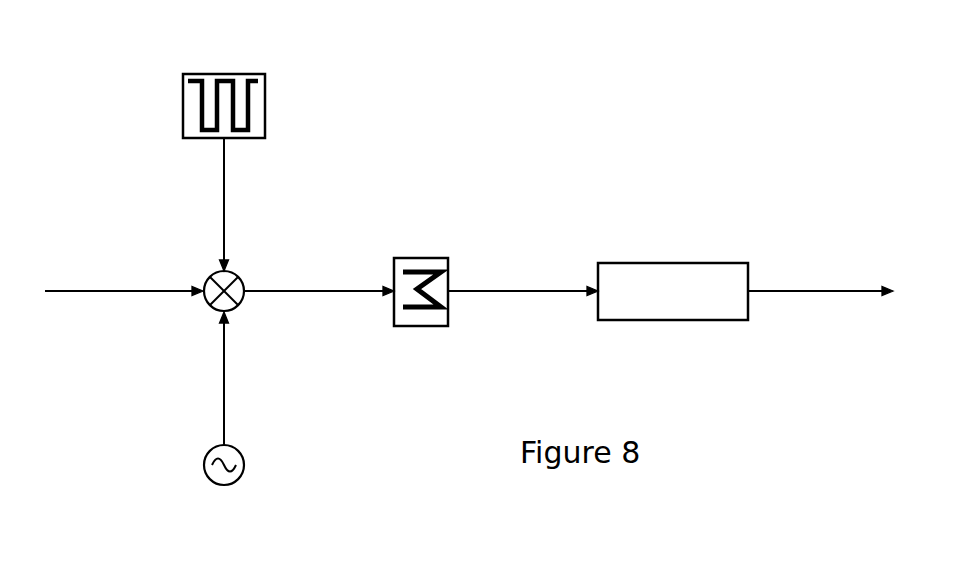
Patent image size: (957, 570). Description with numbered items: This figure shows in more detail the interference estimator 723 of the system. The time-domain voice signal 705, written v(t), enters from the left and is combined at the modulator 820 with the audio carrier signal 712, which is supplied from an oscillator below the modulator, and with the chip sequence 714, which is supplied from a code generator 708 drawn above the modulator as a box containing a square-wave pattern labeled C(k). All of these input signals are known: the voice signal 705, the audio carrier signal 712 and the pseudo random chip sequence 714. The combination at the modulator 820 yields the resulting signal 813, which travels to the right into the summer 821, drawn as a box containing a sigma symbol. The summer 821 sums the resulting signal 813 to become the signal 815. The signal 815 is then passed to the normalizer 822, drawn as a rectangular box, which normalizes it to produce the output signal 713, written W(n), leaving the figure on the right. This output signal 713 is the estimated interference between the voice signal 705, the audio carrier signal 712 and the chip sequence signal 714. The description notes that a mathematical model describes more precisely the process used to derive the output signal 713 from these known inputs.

The code generator C(k) 708 is at (224, 72).
The chip sequence 714 is at (227, 203).
The voice signal 705 is at (126, 247).
The modulator 820 is at (213, 315).
The audio carrier signal 712 is at (225, 403).
The resulting signal 813 is at (277, 291).
The summer 821 is at (422, 258).
The summed signal 815 is at (480, 291).
The normalizer 822 is at (673, 263).
The output signal 713 is at (785, 291).
The interference estimator 723 is at (496, 138).